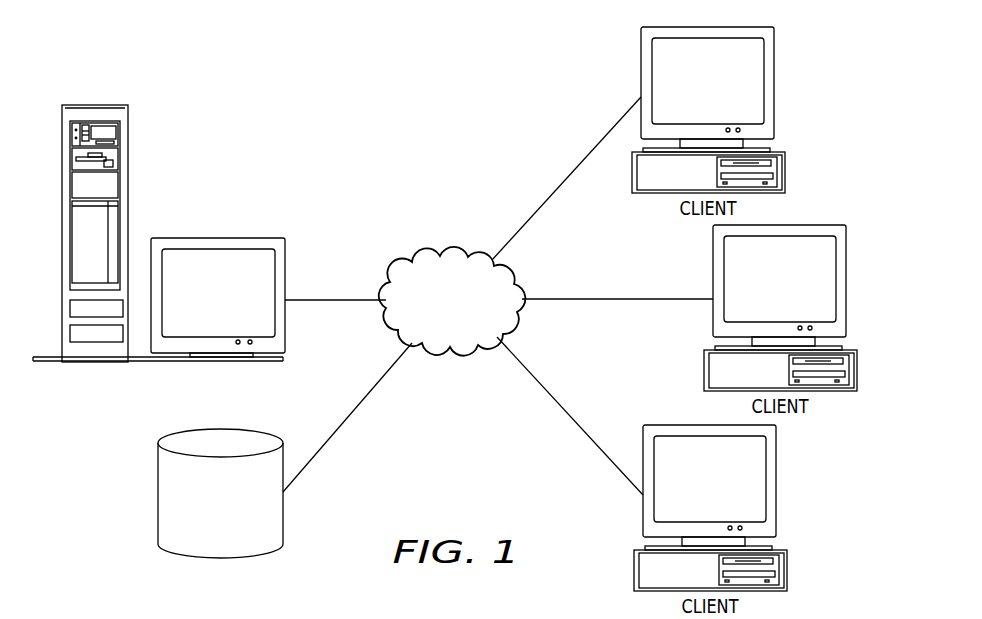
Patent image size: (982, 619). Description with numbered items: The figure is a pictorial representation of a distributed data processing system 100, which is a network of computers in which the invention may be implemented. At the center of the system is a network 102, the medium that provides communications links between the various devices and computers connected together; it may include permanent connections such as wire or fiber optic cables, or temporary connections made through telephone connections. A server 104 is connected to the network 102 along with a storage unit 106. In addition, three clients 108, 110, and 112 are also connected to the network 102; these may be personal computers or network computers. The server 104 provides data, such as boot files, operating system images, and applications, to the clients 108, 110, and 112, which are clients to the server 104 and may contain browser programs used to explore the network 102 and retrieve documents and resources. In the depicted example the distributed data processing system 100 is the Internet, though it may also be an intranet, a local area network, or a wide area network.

The distributed data processing system 100 is at (351, 78).
The network 102 is at (437, 328).
The server 104 is at (202, 299).
The storage unit 106 is at (204, 515).
The client 108 is at (690, 93).
The client 110 is at (763, 291).
The client 112 is at (693, 493).